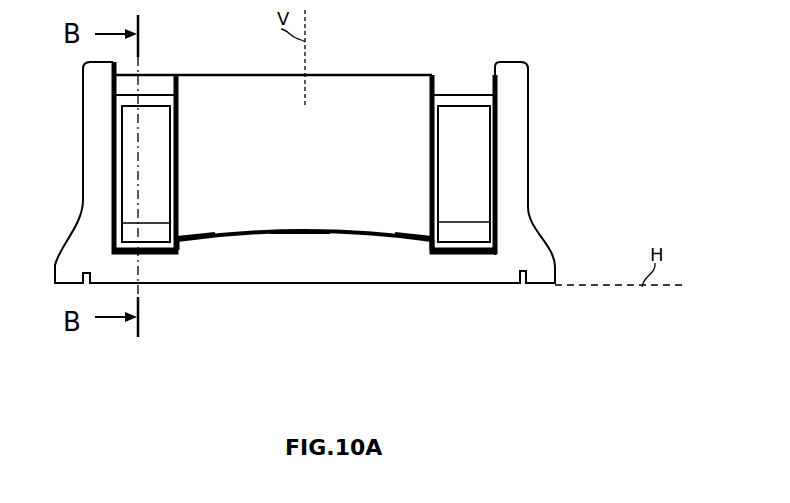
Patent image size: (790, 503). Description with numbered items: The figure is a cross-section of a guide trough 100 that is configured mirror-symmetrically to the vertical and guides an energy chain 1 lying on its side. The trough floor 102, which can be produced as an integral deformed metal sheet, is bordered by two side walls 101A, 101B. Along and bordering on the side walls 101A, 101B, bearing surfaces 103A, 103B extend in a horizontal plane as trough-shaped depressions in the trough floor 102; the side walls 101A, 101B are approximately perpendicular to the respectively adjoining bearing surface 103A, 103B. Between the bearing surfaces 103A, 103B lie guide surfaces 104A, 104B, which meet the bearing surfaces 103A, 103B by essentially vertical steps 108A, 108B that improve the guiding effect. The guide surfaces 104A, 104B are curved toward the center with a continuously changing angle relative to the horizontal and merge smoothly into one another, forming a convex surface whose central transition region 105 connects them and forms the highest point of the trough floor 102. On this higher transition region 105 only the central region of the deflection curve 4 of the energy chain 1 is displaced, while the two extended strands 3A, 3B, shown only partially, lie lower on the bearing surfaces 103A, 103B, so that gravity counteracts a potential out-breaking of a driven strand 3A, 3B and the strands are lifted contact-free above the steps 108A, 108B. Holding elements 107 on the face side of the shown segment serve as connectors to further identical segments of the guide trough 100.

The energy chain 1 is at (244, 62).
The deflection curve 4 is at (318, 128).
The guide trough 100 is at (514, 25).
The side wall 101A is at (116, 86).
The side wall 101B is at (490, 87).
The trough floor 102 is at (320, 237).
The bearing surface 103A is at (150, 255).
The bearing surface 103B is at (460, 256).
The guide surface 104A is at (213, 232).
The guide surface 104B is at (397, 232).
The transition region 105 is at (296, 226).
The holding element 107 is at (508, 174).
The step 108A is at (178, 247).
The step 108B is at (430, 247).
The extended strand 3A is at (165, 175).
The extended strand 3B is at (478, 175).